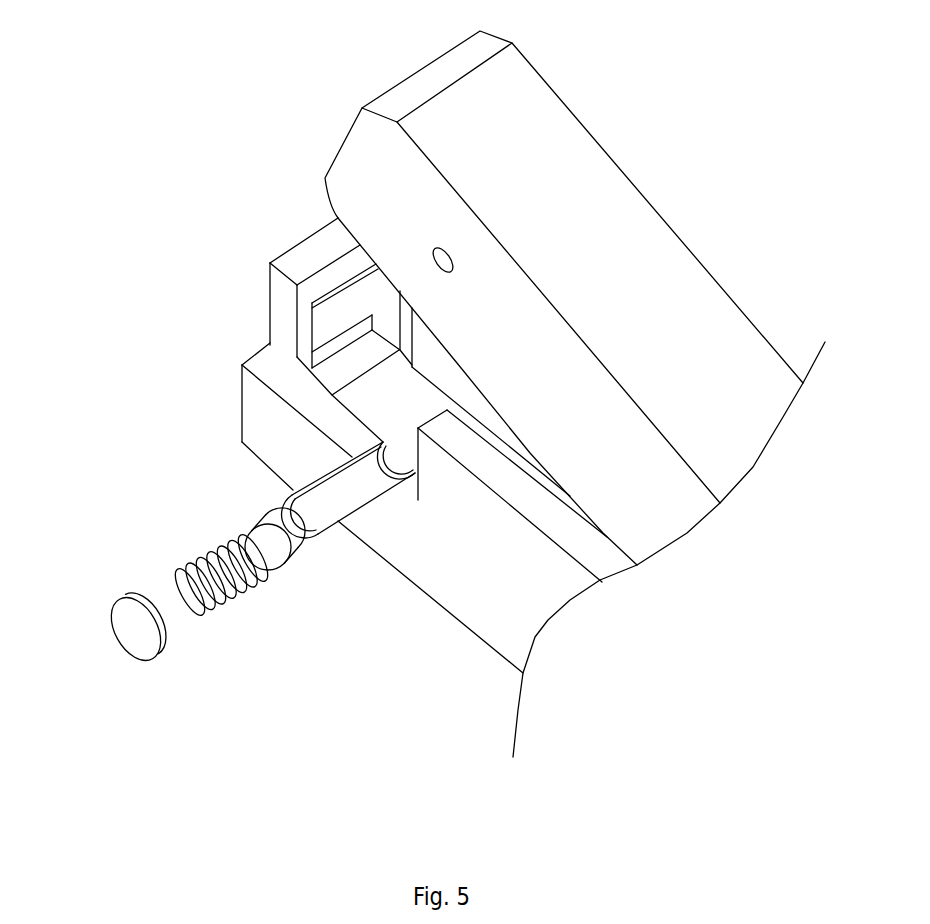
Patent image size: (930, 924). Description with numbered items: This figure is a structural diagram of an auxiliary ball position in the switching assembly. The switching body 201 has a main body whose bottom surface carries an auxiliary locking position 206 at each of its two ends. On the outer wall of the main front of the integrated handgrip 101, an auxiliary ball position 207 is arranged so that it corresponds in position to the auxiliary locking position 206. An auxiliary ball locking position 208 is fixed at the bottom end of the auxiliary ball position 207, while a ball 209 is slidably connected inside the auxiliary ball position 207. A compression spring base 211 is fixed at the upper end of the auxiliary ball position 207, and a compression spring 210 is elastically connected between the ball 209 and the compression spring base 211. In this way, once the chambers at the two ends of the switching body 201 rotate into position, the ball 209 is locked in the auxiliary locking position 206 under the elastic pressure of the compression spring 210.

The integrated handgrip 101 is at (533, 497).
The switching body 201 is at (575, 298).
The auxiliary locking position 206 is at (533, 156).
The auxiliary ball position 207 is at (327, 568).
The auxiliary ball locking position 208 is at (570, 317).
The ball 209 is at (208, 476).
The compression spring 210 is at (180, 559).
The compression spring base 211 is at (94, 665).